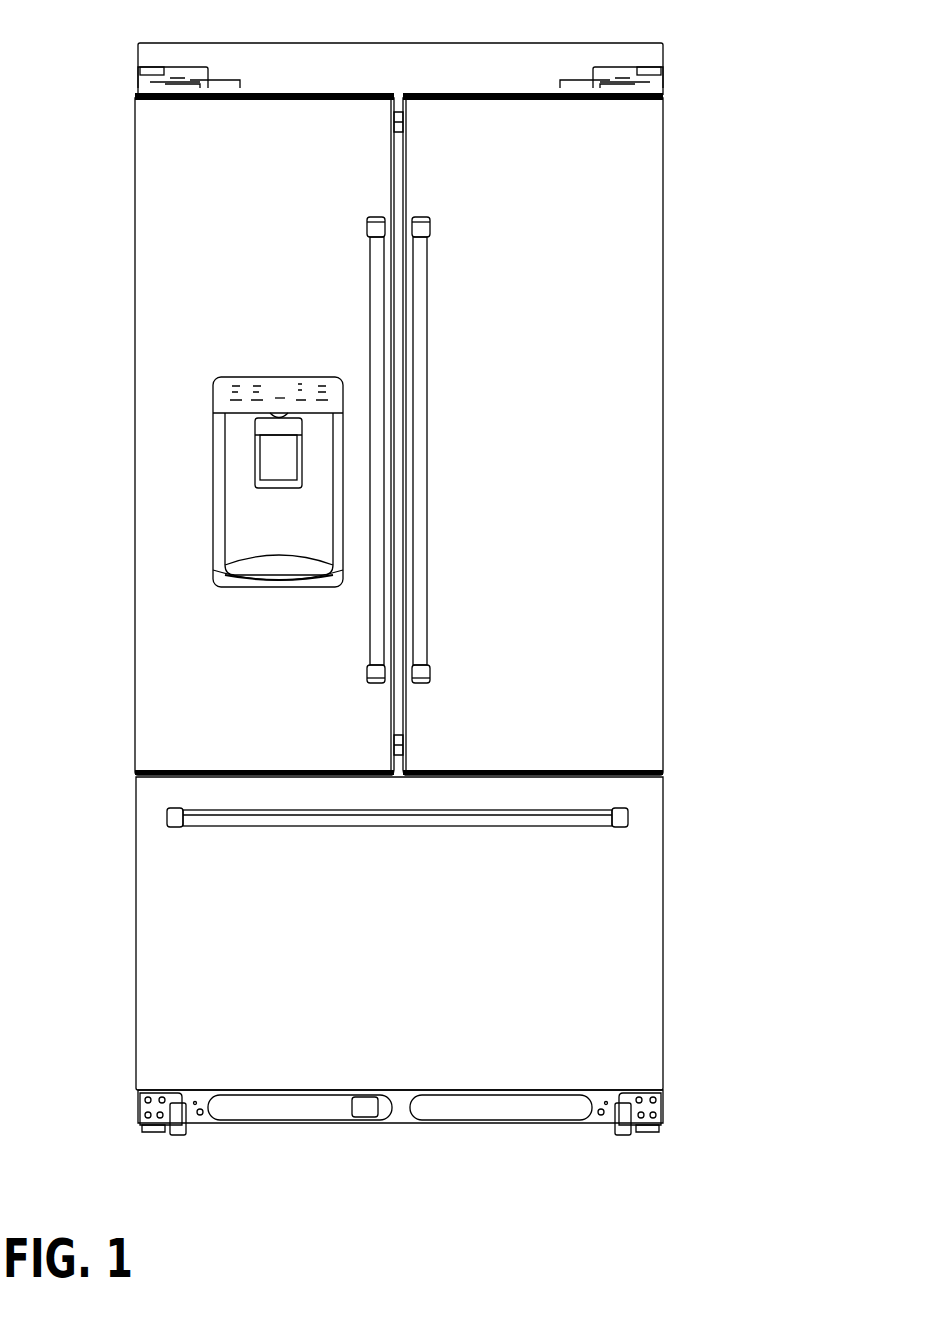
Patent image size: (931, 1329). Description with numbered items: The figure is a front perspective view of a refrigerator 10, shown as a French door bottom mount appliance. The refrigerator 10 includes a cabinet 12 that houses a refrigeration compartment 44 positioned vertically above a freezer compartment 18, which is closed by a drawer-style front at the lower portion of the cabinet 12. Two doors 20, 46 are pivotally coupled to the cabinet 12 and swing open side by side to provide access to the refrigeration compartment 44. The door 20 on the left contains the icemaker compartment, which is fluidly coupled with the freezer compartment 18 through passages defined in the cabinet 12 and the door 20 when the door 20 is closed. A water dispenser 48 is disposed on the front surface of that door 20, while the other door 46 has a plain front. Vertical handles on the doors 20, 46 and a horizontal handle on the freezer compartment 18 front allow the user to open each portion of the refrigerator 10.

The refrigerator 10 is at (740, 123).
The cabinet 12 is at (155, 50).
The freezer compartment 18 is at (580, 933).
The door 20 is at (195, 318).
The refrigeration compartment 44 is at (588, 468).
The door 46 is at (595, 366).
The water dispenser 48 is at (242, 447).